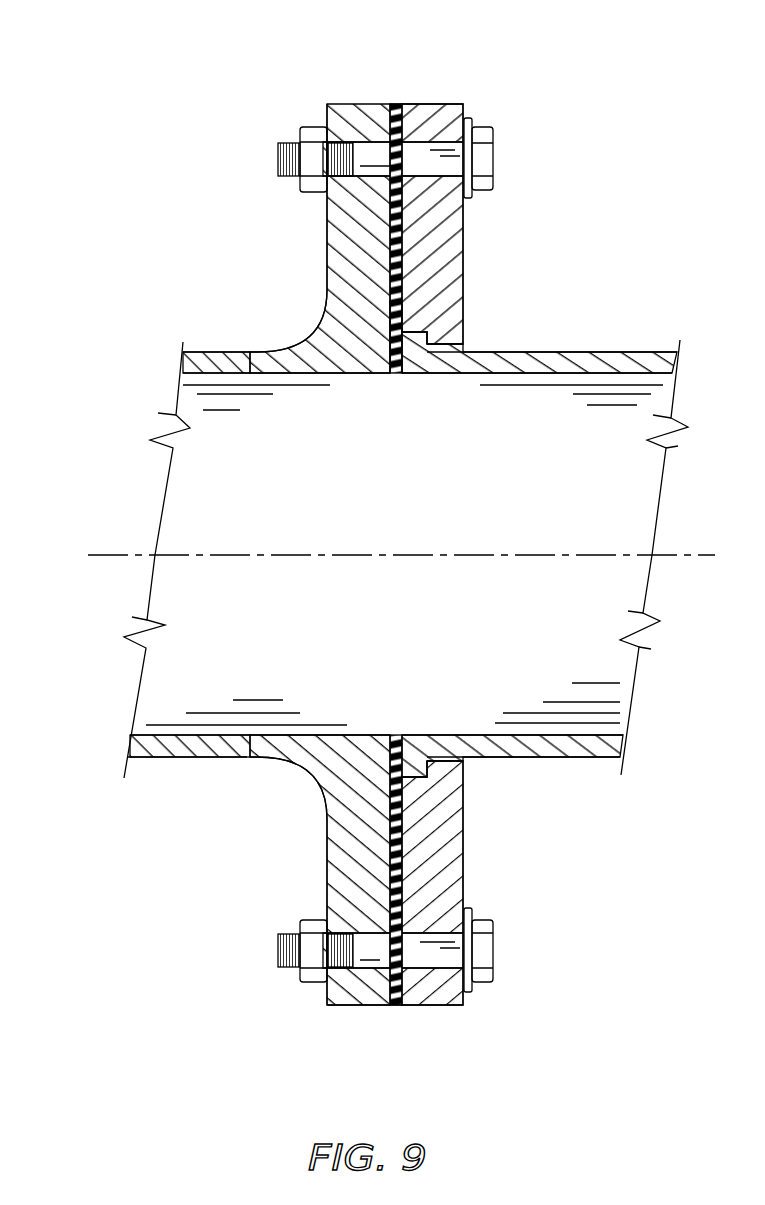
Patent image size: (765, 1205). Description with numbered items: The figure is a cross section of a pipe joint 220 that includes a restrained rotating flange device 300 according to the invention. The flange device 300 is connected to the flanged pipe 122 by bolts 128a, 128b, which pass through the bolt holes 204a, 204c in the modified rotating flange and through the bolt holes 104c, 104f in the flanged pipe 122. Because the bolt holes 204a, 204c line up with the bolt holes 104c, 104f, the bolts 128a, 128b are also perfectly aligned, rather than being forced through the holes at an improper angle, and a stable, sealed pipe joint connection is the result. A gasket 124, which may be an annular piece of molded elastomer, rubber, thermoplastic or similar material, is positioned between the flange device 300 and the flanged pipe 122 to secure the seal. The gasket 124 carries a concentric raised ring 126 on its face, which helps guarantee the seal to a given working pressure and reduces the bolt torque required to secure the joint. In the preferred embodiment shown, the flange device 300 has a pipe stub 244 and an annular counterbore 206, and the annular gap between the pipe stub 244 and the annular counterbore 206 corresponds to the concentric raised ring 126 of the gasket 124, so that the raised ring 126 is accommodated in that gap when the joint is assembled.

The pipe joint 220 is at (168, 98).
The restrained rotating flange device 300 is at (553, 228).
The bolt hole 104c is at (370, 150).
The bolt hole 104f is at (375, 955).
The annular gasket 124 is at (396, 104).
The concentric raised ring 126 is at (395, 352).
The bolt hole 204a is at (437, 160).
The bolt hole 204c is at (445, 958).
The annular counterbore 206 is at (427, 343).
The pipe stub 244 is at (440, 770).
The bolt 128a is at (494, 158).
The bolt 128b is at (493, 952).
The flanged pipe 122 is at (323, 780).